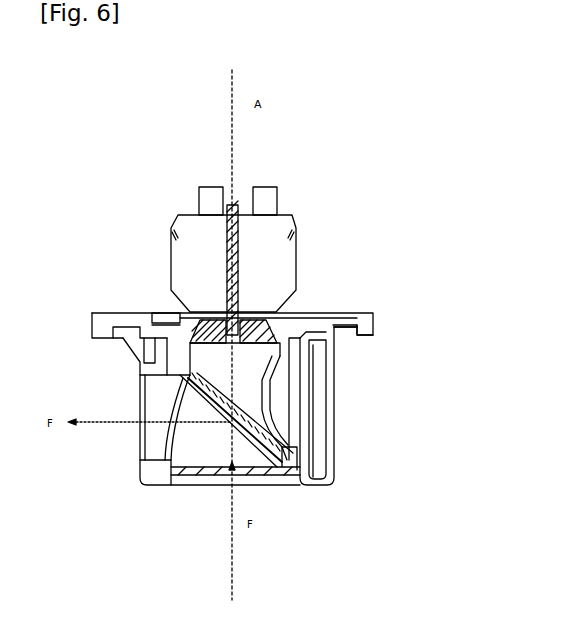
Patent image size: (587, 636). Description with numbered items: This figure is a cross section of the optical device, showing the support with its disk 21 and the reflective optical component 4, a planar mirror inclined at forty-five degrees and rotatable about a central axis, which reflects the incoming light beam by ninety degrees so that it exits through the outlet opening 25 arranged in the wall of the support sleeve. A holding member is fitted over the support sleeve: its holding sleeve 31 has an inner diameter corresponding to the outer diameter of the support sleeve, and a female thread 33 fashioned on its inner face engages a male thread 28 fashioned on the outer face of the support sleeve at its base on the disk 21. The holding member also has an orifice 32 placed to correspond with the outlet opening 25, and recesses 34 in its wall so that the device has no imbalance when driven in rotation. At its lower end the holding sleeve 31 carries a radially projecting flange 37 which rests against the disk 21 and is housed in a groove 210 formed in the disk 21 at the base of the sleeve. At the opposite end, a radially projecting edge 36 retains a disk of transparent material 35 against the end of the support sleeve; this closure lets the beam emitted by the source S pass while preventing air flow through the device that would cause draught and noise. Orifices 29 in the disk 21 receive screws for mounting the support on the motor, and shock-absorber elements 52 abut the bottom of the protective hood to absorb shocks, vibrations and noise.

The source S is at (299, 263).
The shock-absorber elements 52 is at (280, 195).
The groove 210 is at (243, 319).
The disk 21 is at (353, 318).
The orifices 29 is at (176, 318).
The reflective optical component 4 is at (268, 343).
The orifice 32 is at (141, 394).
The outlet opening 25 is at (151, 457).
The transparent disk 35 is at (214, 487).
The radially projecting edge 36 is at (288, 481).
The recesses 34 is at (314, 410).
The holding sleeve 31 is at (319, 403).
The male thread 28 is at (346, 348).
The female thread 33 is at (346, 348).
The flange 37 is at (346, 339).